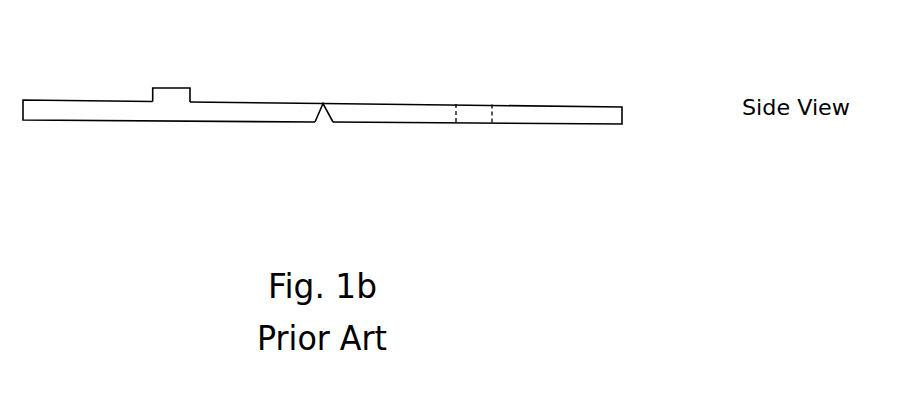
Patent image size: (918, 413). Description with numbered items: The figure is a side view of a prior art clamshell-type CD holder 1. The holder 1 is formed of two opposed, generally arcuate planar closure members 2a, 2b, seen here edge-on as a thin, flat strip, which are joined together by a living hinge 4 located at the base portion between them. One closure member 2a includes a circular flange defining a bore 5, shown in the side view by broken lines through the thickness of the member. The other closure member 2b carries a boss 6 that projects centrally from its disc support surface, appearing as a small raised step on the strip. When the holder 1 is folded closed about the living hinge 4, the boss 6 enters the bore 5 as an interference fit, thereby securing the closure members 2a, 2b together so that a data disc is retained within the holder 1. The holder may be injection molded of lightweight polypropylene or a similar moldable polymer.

The holder 1 is at (352, 89).
The closure member 2a is at (563, 105).
The closure member 2b is at (233, 102).
The living hinge 4 is at (323, 104).
The bore 5 is at (479, 107).
The boss 6 is at (183, 88).